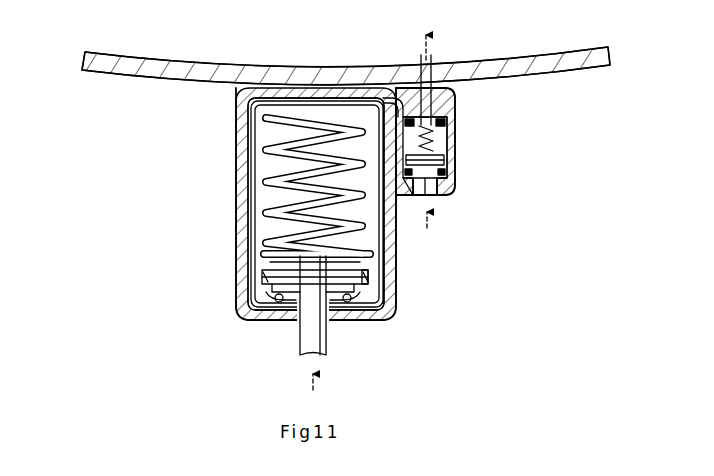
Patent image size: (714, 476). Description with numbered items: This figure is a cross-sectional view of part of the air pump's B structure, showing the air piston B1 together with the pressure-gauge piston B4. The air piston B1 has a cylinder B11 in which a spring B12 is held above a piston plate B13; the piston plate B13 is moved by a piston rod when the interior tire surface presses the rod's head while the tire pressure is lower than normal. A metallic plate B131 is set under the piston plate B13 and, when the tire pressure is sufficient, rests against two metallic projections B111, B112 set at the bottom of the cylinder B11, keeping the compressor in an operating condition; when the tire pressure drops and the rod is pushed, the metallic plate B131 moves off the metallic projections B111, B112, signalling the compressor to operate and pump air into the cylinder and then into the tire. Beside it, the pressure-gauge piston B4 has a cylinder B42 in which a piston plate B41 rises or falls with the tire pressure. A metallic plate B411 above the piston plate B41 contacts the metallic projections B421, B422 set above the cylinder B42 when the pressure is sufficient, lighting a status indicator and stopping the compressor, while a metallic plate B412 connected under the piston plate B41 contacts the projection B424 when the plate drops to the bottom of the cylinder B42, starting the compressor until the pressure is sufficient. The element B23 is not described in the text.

The air piston B1 is at (242, 193).
The cylinder B11 is at (270, 127).
The spring B12 is at (274, 147).
The piston plate B13 is at (252, 295).
The metallic plate B131 is at (386, 291).
The metallic projection B111 is at (276, 303).
The metallic projection B112 is at (344, 305).
The pressure-gauge piston B4 is at (449, 160).
The piston plate B41 is at (430, 170).
The metallic plate B411 is at (447, 124).
The metallic plate B412 is at (412, 167).
The cylinder B42 is at (429, 112).
The metallic projection B421 is at (440, 118).
The metallic projection B422 is at (396, 98).
The metallic projection B424 is at (345, 85).
The stops B23 is at (443, 176).